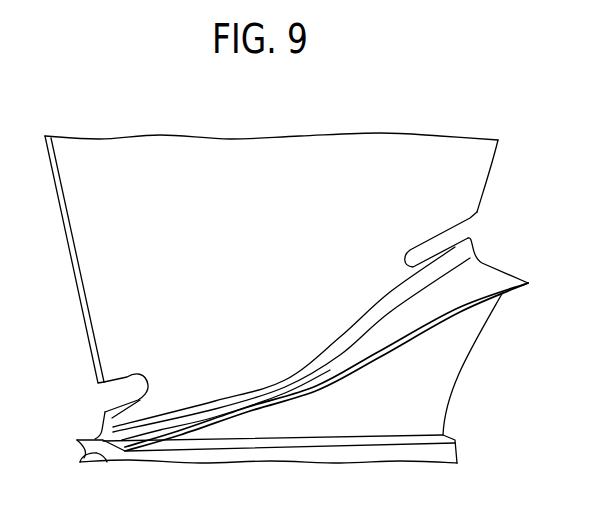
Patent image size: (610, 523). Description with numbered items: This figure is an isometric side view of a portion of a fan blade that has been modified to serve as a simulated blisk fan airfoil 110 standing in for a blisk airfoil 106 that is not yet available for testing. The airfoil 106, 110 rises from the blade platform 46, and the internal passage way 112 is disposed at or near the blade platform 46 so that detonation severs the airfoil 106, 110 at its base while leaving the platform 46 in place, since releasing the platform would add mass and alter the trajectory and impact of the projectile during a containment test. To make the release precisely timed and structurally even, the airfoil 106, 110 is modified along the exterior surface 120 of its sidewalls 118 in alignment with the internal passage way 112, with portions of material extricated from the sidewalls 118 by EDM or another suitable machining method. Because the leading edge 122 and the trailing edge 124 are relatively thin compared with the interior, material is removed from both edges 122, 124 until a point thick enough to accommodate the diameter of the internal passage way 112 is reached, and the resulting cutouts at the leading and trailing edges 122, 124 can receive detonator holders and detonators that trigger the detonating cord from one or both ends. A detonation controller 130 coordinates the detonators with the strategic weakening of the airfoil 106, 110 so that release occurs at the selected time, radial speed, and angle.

The simulated blisk fan airfoil 110 is at (271, 177).
The airfoil 106 is at (441, 239).
The trailing edge 124 is at (491, 180).
The leading edge 122 is at (82, 315).
The exterior surface 120 is at (256, 275).
The sidewalls 118 is at (149, 388).
The internal passage way 112 is at (140, 393).
The blade platform 46 is at (503, 276).
The detonation controller 130 is at (303, 420).